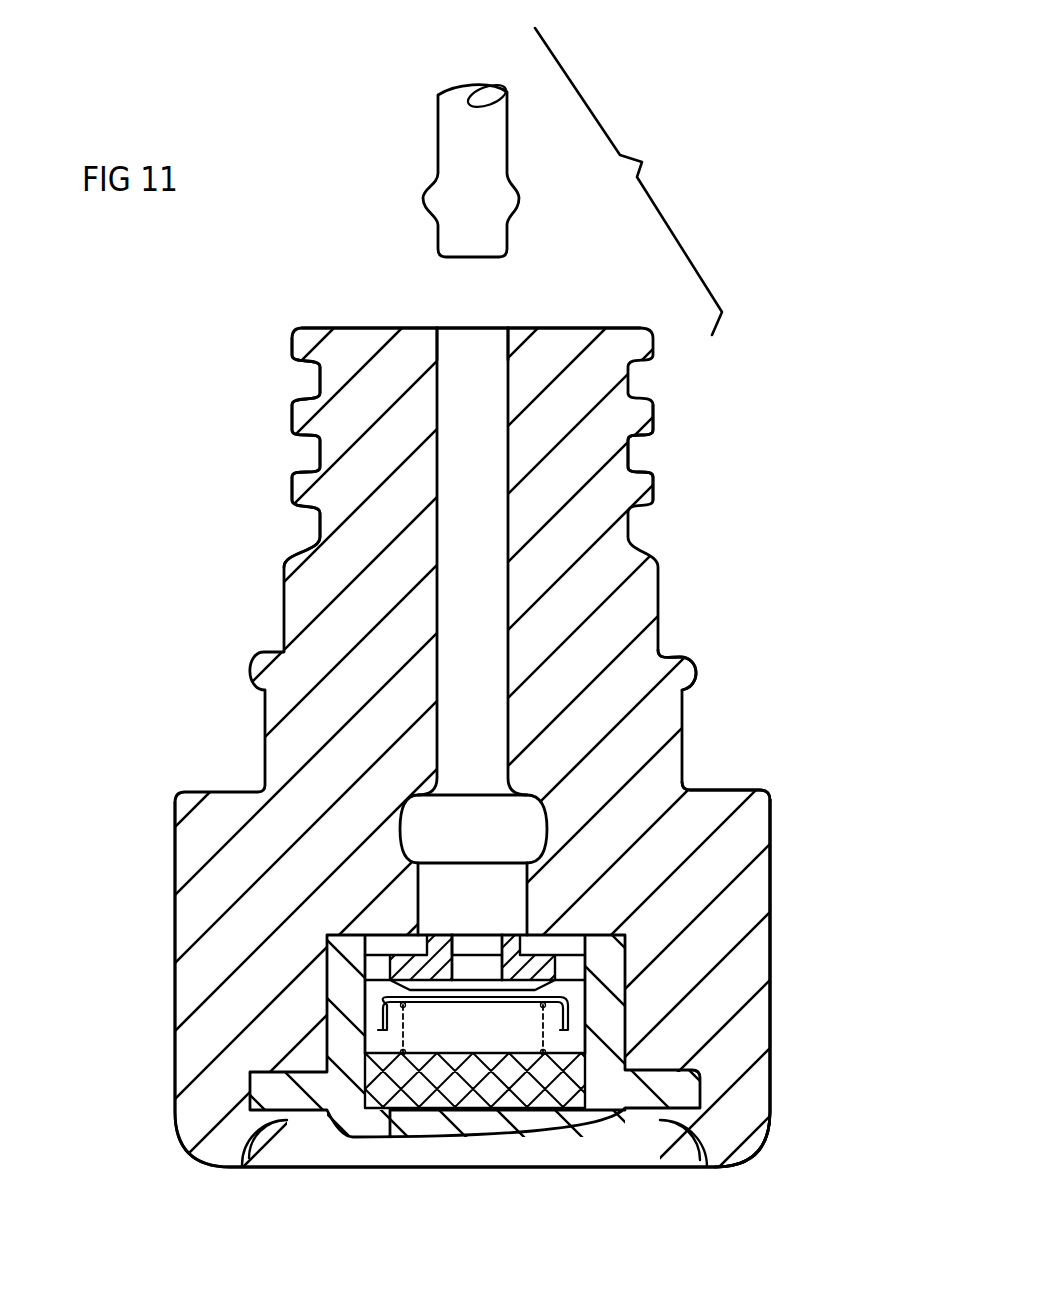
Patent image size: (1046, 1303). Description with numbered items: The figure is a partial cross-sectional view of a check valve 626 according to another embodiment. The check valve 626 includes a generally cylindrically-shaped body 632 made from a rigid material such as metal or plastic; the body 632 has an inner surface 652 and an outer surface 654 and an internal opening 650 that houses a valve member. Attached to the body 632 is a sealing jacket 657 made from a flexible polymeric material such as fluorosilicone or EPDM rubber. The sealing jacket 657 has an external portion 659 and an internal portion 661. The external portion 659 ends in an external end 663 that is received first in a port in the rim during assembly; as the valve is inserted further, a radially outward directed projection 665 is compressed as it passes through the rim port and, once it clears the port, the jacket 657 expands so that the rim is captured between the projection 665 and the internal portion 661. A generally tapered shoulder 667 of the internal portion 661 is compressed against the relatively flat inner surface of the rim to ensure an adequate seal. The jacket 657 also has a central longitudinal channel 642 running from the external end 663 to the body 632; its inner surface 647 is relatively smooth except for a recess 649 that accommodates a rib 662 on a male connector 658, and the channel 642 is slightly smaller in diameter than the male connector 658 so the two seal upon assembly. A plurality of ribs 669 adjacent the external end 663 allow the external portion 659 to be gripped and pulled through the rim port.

The check valve 626 is at (721, 413).
The body 632 is at (627, 998).
The central longitudinal channel 642 is at (483, 573).
The inner surface 647 is at (508, 345).
The recess 649 is at (530, 845).
The internal opening 650 is at (505, 1041).
The inner surface 652 is at (567, 1040).
The outer surface 654 is at (625, 957).
The sealing jacket 657 is at (775, 818).
The male connector 658 is at (448, 165).
The external portion 659 is at (167, 330).
The internal portion 661 is at (140, 792).
The rib 662 is at (508, 192).
The external end 663 is at (605, 330).
The radially outward directed projection 665 is at (685, 658).
The tapered shoulder 667 is at (722, 788).
The ribs 669 is at (652, 472).